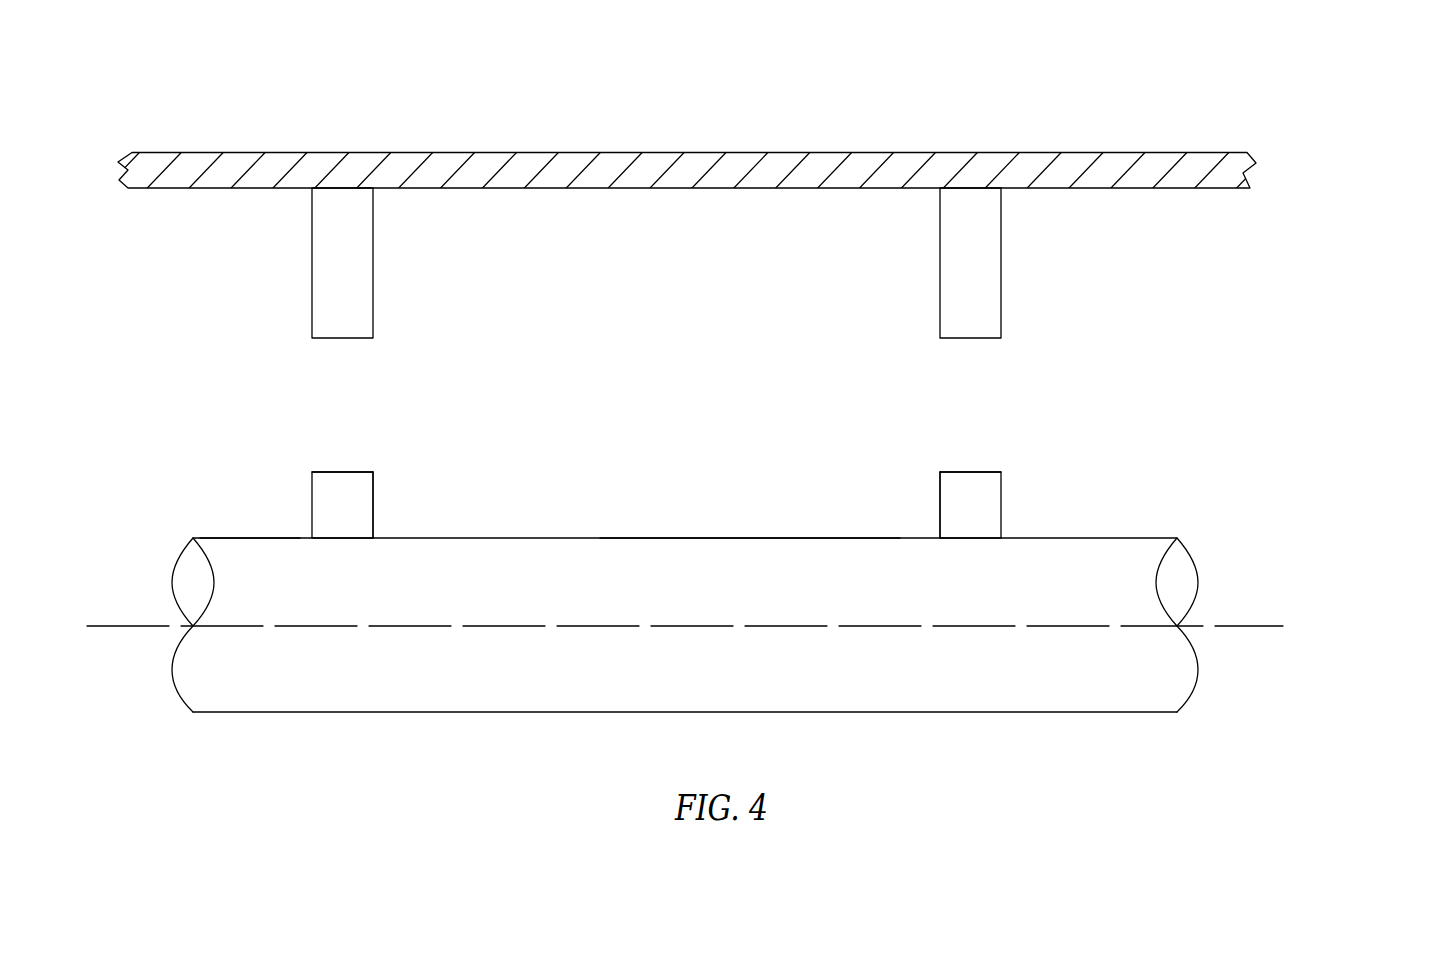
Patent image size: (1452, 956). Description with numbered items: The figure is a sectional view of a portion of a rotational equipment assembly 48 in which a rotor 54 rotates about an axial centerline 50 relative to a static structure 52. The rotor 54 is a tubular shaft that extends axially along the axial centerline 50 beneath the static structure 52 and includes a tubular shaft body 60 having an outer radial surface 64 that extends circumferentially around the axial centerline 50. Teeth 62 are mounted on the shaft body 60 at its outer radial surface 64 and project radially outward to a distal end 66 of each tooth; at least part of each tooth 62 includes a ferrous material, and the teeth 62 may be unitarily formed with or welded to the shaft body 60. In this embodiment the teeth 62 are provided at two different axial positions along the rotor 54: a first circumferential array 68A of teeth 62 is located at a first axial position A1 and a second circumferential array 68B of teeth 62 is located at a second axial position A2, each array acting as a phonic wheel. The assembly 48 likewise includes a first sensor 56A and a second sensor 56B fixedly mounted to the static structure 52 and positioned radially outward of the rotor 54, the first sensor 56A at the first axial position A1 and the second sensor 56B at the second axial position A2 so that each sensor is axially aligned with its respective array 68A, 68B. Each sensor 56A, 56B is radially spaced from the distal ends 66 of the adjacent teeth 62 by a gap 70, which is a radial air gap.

The rotational equipment assembly 48 is at (1336, 166).
The axial centerline 50 is at (1275, 630).
The static structure 52 is at (1117, 165).
The rotor 54 is at (1160, 511).
The first sensor 56A is at (362, 232).
The second sensor 56B is at (990, 250).
The tubular shaft body 60 is at (768, 552).
The teeth 62 is at (363, 505).
The outer radial surface 64 is at (245, 538).
The distal end 66 is at (355, 472).
The first circumferential array 68A is at (268, 442).
The second circumferential array 68B is at (896, 442).
The gap 70 is at (368, 404).
The first axial position A1 is at (343, 132).
The second axial position A2 is at (972, 132).